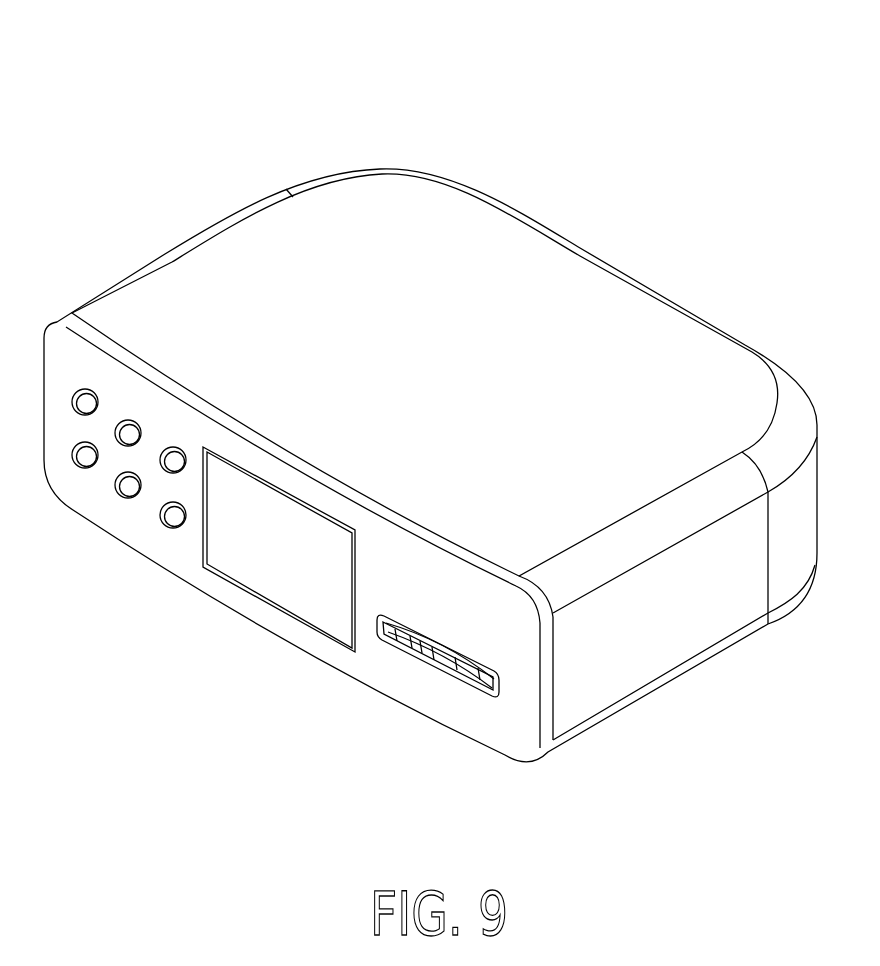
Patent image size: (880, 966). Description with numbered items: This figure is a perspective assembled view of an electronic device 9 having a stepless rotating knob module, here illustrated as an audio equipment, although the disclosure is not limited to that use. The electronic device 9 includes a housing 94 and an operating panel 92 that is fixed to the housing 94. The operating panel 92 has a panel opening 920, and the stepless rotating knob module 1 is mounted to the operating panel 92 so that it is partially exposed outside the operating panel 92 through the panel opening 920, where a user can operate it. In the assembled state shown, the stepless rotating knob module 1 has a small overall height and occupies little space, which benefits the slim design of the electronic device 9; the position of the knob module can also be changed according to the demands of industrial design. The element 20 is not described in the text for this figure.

The electronic device 9 is at (735, 57).
The housing 94 is at (553, 277).
The operating panel 92 is at (153, 520).
The panel opening 920 is at (483, 690).
The stepless rotating knob module 1 is at (426, 677).
The connector 20 is at (410, 652).